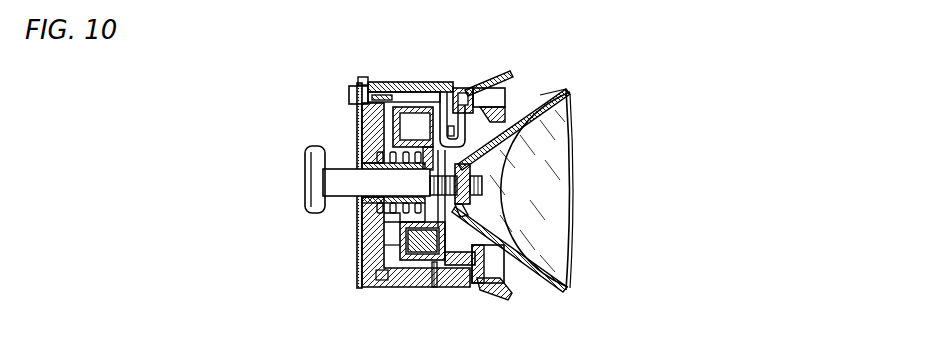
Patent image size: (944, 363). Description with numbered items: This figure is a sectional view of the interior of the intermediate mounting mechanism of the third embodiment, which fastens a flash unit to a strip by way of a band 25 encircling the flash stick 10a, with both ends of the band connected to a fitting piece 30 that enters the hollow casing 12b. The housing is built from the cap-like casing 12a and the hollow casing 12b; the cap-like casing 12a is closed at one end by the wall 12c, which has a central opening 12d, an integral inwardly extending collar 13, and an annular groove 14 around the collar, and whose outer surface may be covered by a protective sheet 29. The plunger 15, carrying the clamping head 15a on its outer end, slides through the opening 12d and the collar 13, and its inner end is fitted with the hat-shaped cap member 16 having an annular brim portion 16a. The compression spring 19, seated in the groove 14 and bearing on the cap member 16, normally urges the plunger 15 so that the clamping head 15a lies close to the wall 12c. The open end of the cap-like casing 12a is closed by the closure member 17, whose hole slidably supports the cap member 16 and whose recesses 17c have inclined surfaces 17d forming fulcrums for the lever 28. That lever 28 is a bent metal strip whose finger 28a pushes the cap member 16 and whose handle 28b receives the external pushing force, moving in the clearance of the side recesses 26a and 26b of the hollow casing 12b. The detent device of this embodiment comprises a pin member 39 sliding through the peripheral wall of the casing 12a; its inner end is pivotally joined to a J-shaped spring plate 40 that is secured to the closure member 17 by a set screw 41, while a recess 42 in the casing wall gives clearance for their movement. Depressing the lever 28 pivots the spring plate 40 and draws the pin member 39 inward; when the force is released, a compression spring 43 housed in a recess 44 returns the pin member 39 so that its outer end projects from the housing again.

The flash stick 10a is at (555, 215).
The cap-like casing 12a is at (360, 290).
The hollow casing 12b is at (500, 268).
The wall 12c is at (368, 140).
The central opening 12d is at (365, 222).
The collar 13 is at (420, 255).
The annular groove 14 is at (388, 233).
The plunger 15 is at (330, 182).
The clamping head 15a is at (305, 188).
The cap member 16 is at (405, 235).
The annular brim portion 16a is at (365, 265).
The closure member 17 is at (450, 266).
The recesses 17c is at (415, 118).
The surfaces 17d is at (441, 268).
The compression spring 19 is at (394, 135).
The band 25 is at (562, 288).
The side recess 26a is at (478, 89).
The side recess 26b is at (503, 285).
The lever 28 is at (500, 70).
The finger 28a is at (357, 100).
The handle 28b is at (503, 77).
The protective sheet 29 is at (308, 268).
The fitting piece 30 is at (545, 262).
The pin member 39 is at (366, 80).
The spring plate 40 is at (475, 140).
The set screw 41 is at (462, 152).
The recess 42 is at (461, 100).
The compression spring 43 is at (378, 82).
The recess 44 is at (398, 84).